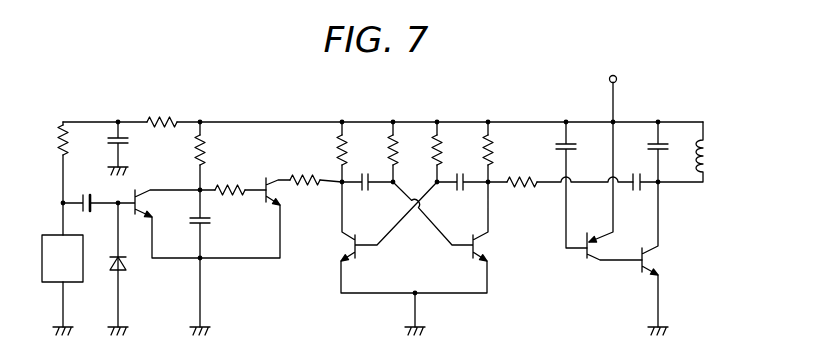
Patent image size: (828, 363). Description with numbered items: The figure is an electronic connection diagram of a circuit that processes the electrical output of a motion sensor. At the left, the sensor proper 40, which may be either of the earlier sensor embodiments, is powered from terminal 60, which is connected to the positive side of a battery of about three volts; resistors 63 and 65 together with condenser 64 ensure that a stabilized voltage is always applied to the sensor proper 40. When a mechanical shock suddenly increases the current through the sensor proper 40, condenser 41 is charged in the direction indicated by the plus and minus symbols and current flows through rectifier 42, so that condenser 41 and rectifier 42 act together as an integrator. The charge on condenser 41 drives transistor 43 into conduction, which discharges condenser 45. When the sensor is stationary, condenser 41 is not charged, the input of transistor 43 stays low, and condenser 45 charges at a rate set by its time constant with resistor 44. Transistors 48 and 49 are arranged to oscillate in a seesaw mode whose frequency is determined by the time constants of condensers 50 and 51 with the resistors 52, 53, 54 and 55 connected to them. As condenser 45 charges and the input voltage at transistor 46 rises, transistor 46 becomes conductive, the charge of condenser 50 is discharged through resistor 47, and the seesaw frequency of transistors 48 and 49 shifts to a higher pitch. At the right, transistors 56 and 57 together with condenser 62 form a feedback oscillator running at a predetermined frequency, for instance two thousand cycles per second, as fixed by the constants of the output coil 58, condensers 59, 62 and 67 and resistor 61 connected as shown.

The sensor proper 40 is at (76, 279).
The condenser 41 is at (89, 195).
The rectifier 42 is at (125, 263).
The transistor 43 is at (138, 192).
The resistor 44 is at (205, 150).
The condenser 45 is at (211, 221).
The transistor 46 is at (266, 184).
The resistor 47 is at (306, 187).
The transistor 48 is at (357, 250).
The transistor 49 is at (471, 252).
The condenser 50 is at (362, 193).
The condenser 51 is at (459, 193).
The resistor 52 is at (338, 150).
The resistor 53 is at (390, 150).
The resistor 54 is at (436, 152).
The resistor 55 is at (487, 150).
The transistor 56 is at (586, 256).
The transistor 57 is at (640, 268).
The output coil 58 is at (707, 140).
The condenser 59 is at (649, 147).
The terminal 60 is at (616, 77).
The resistor 61 is at (521, 190).
The condenser 62 is at (637, 192).
The resistor 63 is at (163, 120).
The condenser 64 is at (112, 140).
The resistor 65 is at (61, 142).
The condenser 67 is at (556, 147).